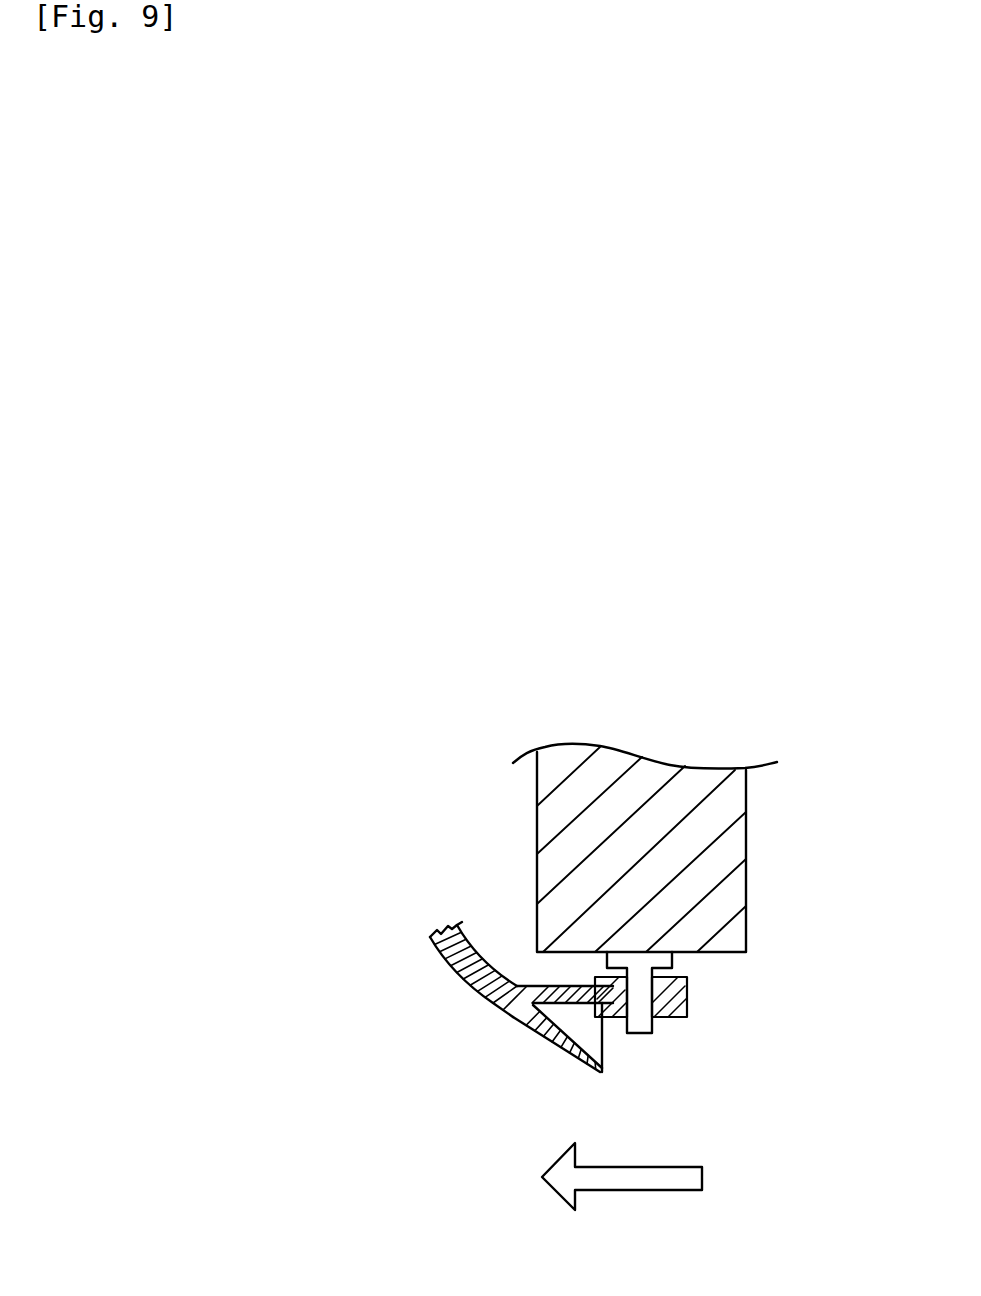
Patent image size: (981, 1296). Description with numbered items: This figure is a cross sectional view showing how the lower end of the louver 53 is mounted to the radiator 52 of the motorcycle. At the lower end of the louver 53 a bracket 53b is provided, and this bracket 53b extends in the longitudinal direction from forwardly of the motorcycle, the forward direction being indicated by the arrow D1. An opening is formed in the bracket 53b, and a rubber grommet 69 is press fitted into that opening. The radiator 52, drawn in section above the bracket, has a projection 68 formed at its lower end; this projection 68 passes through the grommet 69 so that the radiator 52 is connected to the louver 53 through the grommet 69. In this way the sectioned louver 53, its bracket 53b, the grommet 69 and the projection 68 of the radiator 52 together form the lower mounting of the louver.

The radiator 52 is at (730, 890).
The projection 68 is at (672, 957).
The rubber grommet 69 is at (687, 983).
The louver 53 is at (500, 1008).
The bracket 53b is at (560, 1003).
The forward direction D1 is at (654, 1176).